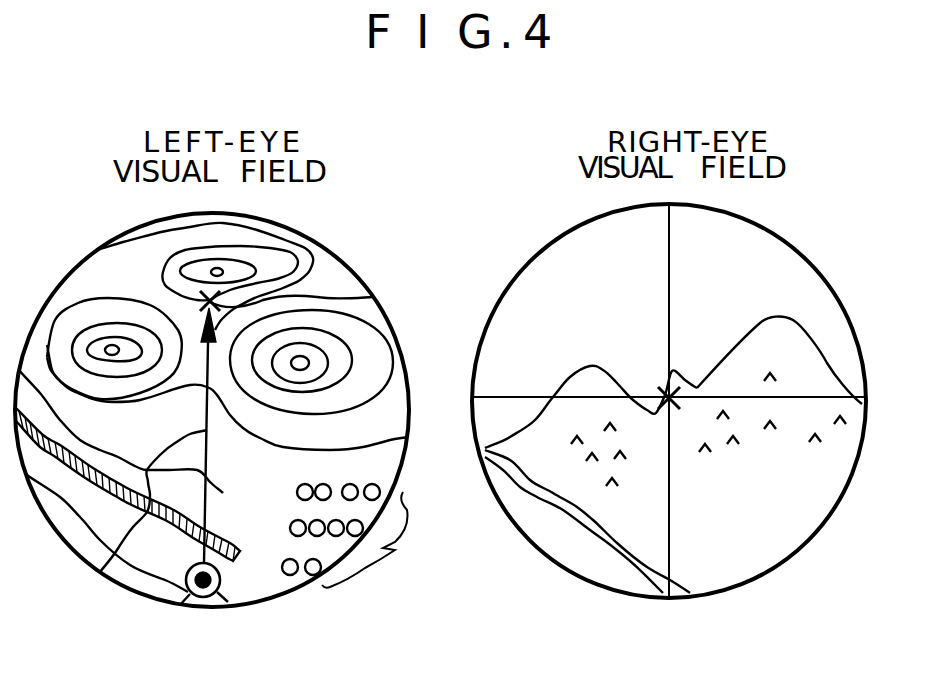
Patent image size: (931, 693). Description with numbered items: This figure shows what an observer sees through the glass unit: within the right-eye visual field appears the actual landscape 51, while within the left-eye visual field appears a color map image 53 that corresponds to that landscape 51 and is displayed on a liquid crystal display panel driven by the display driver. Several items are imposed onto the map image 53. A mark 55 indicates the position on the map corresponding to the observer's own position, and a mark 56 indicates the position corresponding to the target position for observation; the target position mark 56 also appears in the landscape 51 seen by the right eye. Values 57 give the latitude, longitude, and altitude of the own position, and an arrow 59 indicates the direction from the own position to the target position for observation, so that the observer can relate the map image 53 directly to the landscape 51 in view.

The landscape 51 is at (788, 276).
The map image 53 is at (328, 290).
The mark indicative of own position 55 is at (192, 592).
The mark indicative of target position 56 is at (205, 300).
The values indicative of latitude, longitude, and altitude 57 is at (383, 548).
The arrow 59 is at (100, 572).